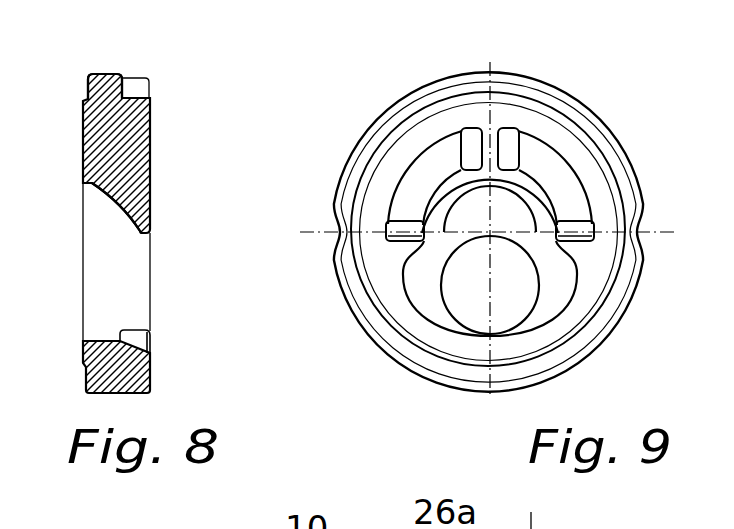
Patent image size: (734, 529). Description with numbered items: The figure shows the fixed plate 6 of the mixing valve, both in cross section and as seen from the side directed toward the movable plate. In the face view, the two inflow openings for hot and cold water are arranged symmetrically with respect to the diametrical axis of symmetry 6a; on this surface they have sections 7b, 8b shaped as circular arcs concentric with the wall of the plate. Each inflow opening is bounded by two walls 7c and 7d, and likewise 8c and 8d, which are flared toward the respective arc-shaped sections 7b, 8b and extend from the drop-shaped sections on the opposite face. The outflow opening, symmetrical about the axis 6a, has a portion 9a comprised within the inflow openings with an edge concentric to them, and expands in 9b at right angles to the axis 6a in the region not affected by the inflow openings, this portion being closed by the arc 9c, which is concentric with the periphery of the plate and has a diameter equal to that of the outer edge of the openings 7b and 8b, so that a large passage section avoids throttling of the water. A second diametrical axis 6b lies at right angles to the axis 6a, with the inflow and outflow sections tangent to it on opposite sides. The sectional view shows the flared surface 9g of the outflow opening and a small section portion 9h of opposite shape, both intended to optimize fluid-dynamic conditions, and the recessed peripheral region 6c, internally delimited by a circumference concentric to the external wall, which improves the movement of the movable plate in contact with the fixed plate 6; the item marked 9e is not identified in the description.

In FIG. 8, the fixed plate 6 is at (156, 175).
In FIG. 9, the fixed plate 6 is at (656, 190).
In FIG. 9, the diametrical axis of symmetry 6a is at (494, 63).
In FIG. 9, the diametrical axis 6b is at (307, 230).
In FIG. 8, the recessed peripheral region 6c is at (90, 85).
In FIG. 9, the recessed peripheral region 6c is at (370, 323).
In FIG. 9, the section of inflow opening 7b is at (415, 162).
In FIG. 9, the wall of inflow opening 7c is at (412, 242).
In FIG. 9, the wall of inflow opening 7d is at (470, 155).
In FIG. 9, the section of inflow opening 8b is at (572, 163).
In FIG. 9, the wall of inflow opening 8c is at (592, 242).
In FIG. 9, the wall of inflow opening 8d is at (509, 148).
In FIG. 9, the portion of outflow opening 9a is at (526, 201).
In FIG. 9, the expanded portion of outflow opening 9b is at (576, 293).
In FIG. 9, the arc closing the outflow opening 9c is at (513, 335).
In FIG. 9, the inner rim 9e is at (393, 317).
In FIG. 8, the flared surface of outflow opening 9g is at (119, 209).
In FIG. 9, the flared surface of outflow opening 9g is at (470, 223).
In FIG. 8, the small section portion 9h is at (136, 343).